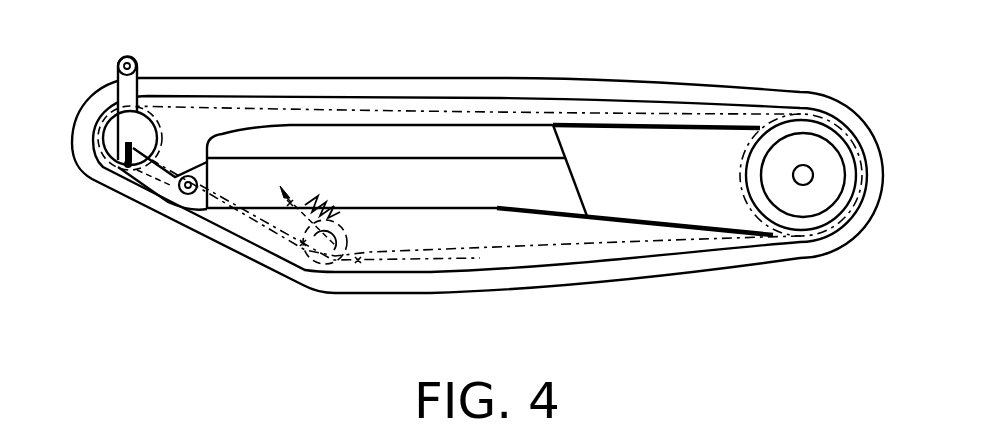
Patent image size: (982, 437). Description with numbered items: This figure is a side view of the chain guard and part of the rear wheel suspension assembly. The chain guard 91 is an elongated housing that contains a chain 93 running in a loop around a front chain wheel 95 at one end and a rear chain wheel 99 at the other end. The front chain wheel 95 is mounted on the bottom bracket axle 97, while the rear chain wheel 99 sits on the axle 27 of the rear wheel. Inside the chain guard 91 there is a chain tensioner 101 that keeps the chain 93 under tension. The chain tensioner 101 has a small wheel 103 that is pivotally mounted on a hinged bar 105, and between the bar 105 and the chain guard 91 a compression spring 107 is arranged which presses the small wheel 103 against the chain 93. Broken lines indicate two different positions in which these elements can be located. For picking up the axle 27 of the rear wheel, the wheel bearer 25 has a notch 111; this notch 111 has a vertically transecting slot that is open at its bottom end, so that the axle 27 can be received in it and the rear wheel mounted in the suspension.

The wheel bearer 25 is at (123, 97).
The axle of the rear wheel 27 is at (105, 163).
The chain guard 91 is at (565, 92).
The chain 93 is at (383, 112).
The front chain wheel 95 is at (738, 187).
The bottom bracket axle 97 is at (805, 178).
The rear chain wheel 99 is at (188, 90).
The chain tensioner 101 is at (293, 246).
The small wheel 103 is at (365, 270).
The hinged bar 105 is at (297, 203).
The compression spring 107 is at (343, 197).
The notch 111 is at (128, 165).